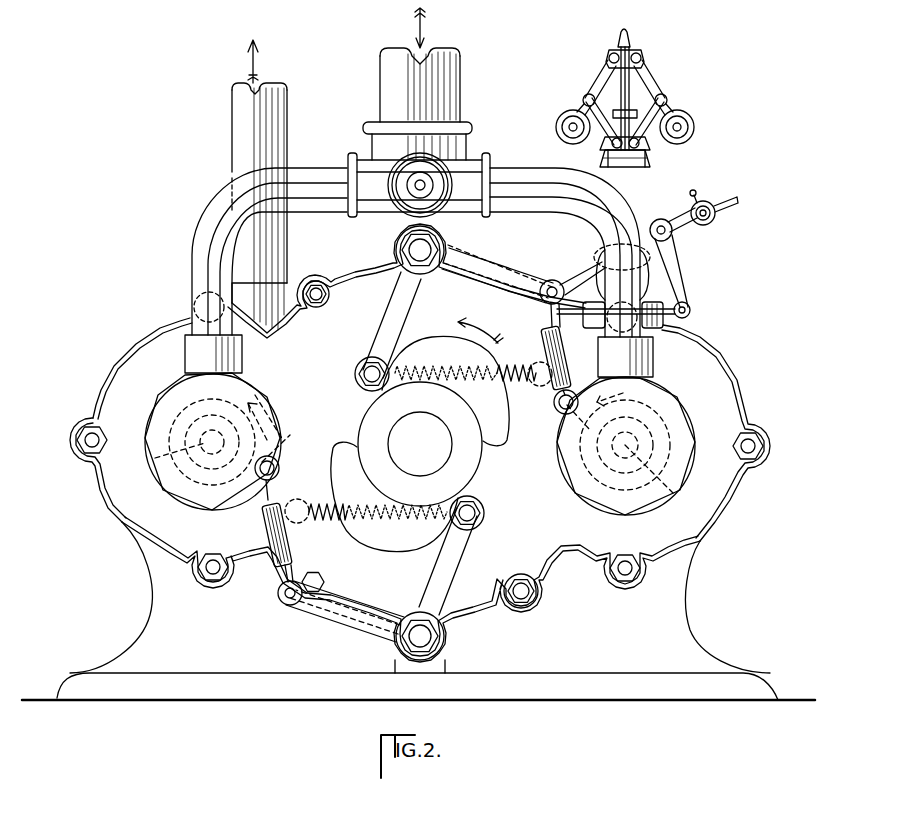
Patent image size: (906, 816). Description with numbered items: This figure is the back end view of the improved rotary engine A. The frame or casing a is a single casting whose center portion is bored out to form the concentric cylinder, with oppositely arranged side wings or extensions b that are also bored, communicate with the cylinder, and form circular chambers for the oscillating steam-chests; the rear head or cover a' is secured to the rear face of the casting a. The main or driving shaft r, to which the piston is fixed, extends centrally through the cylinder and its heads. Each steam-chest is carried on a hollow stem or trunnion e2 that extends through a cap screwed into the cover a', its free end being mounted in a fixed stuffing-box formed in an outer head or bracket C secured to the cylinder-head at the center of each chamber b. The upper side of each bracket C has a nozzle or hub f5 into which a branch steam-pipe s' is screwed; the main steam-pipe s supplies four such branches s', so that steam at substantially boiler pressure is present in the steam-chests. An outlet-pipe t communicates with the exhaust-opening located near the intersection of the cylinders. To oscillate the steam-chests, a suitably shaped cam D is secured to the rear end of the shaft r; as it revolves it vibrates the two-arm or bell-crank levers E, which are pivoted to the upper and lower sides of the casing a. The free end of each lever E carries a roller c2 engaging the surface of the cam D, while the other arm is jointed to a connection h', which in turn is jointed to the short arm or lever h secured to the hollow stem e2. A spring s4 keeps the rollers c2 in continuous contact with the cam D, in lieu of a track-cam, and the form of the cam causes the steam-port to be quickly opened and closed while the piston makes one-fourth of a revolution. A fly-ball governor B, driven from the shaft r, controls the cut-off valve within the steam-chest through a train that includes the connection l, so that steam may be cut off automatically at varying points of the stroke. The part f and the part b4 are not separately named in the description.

The frame or casing a is at (418, 611).
The rear head or cover a' is at (420, 444).
The side wings or extensions b is at (113, 364).
The cylinder head polygon f is at (245, 392).
The stuffing-box bracket C is at (160, 413).
The hollow stem or trunnion e2 is at (155, 458).
The arm or lever h is at (416, 445).
The nozzle or hub f5 is at (194, 354).
The branch steam-pipe s' is at (411, 245).
The rotary engine A is at (306, 185).
The main steam-pipe s is at (412, 84).
The outlet-pipe t is at (238, 112).
The fly-ball governor B is at (592, 78).
The connection l is at (670, 308).
The lever pivot stud b4 is at (418, 246).
The bell-crank lever E is at (411, 296).
The roller c2 is at (355, 375).
The connection h' is at (401, 443).
The cam D is at (348, 414).
The main or driving shaft r is at (420, 444).
The spring s4 is at (508, 378).